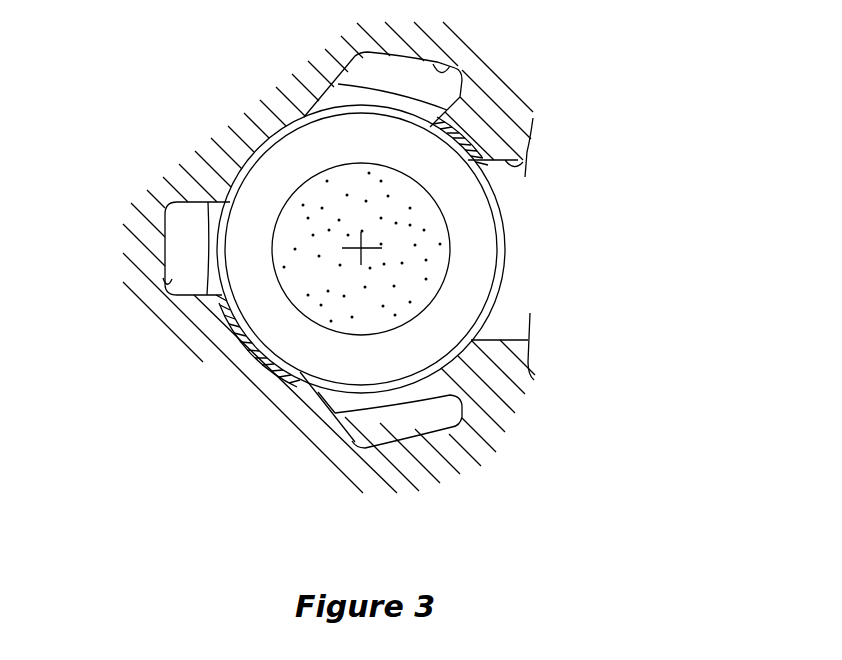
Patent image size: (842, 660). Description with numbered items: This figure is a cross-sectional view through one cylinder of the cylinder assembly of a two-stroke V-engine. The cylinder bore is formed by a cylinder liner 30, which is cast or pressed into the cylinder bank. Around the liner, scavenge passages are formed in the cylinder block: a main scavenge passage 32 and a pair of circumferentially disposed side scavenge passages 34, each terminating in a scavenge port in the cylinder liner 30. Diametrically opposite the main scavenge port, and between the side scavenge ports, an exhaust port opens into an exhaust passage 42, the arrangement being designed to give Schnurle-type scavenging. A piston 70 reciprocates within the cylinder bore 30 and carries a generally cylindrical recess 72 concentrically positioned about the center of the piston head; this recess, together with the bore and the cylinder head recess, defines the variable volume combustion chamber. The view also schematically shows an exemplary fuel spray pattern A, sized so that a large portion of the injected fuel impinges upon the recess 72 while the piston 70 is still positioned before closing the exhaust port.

The cylinder liner 30 is at (450, 148).
The main scavenge passage 32 is at (165, 288).
The side scavenge passages 34 is at (447, 68).
The exhaust passage 42 is at (535, 168).
The piston 70 is at (473, 205).
The recess 72 is at (433, 262).
The spray pattern A is at (361, 249).